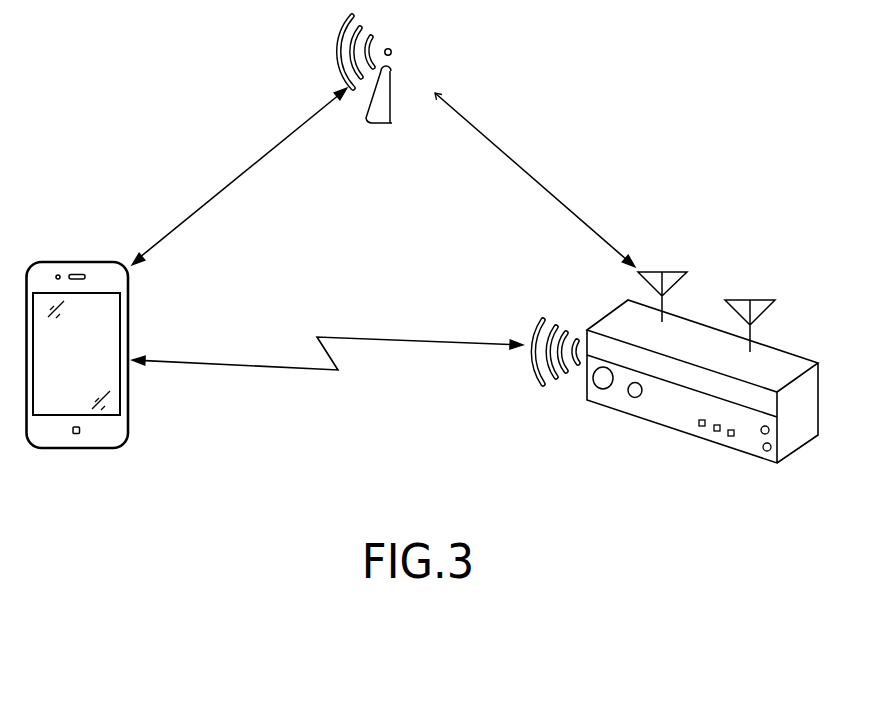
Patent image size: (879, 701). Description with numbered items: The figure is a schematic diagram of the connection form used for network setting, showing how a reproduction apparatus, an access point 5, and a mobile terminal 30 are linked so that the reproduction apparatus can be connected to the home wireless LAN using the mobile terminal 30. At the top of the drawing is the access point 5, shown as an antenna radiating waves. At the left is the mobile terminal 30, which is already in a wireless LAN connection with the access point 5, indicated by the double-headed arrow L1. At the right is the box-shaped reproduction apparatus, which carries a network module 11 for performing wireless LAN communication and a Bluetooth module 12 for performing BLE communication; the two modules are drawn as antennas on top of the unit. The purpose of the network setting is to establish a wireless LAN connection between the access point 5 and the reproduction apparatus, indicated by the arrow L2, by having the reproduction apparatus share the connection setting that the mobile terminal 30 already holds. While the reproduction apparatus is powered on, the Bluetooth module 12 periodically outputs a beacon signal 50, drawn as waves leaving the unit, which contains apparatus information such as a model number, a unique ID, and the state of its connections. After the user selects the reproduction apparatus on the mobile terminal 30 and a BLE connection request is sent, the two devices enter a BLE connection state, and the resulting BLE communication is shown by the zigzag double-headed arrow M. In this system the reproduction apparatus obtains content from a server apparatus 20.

The access point 5 is at (386, 150).
The network module 11 is at (690, 302).
The Bluetooth module 12 is at (777, 334).
The server apparatus 20 is at (647, 447).
The mobile terminal 30 is at (80, 262).
The beacon signal 50 is at (543, 315).
The arrow L1 is at (234, 180).
The arrow L2 is at (541, 184).
The arrow M is at (339, 337).